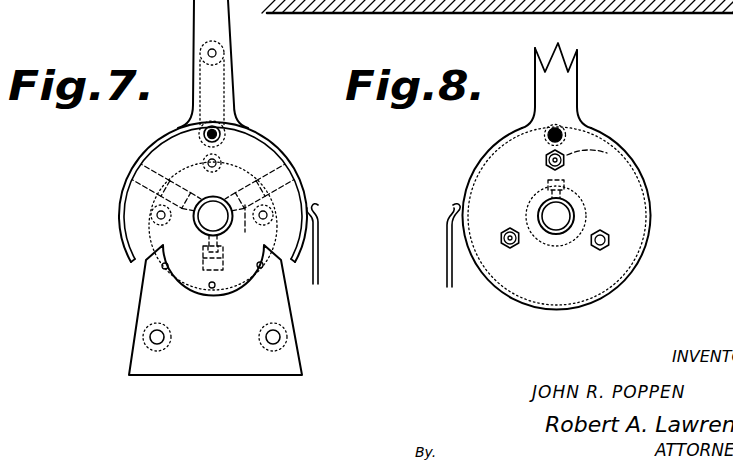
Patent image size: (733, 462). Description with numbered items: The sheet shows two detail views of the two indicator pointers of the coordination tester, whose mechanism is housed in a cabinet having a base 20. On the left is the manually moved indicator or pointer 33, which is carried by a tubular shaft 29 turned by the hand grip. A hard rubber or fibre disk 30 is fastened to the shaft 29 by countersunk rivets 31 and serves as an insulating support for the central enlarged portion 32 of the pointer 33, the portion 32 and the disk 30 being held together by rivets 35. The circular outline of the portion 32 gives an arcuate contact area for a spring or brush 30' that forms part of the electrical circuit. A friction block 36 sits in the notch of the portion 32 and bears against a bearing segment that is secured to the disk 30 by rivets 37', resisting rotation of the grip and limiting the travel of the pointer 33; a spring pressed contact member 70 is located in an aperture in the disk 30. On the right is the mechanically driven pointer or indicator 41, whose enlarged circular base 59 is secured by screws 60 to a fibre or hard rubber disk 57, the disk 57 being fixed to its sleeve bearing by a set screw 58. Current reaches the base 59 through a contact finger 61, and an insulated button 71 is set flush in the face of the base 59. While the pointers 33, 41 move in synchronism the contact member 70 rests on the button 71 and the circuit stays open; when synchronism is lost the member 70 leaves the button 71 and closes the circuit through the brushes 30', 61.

In FIG. 8, the base 20 is at (445, 13).
In FIG. 7, the tubular shaft 29 is at (197, 232).
In FIG. 7, the disk 30 is at (286, 198).
In FIG. 7, the spring or brush 30' is at (333, 244).
In FIG. 7, the countersunk rivets 31 is at (227, 250).
In FIG. 7, the central enlarged portion 32 is at (272, 140).
In FIG. 7, the indicator or pointer 33 is at (201, 9).
In FIG. 7, the rivets 35 is at (159, 214).
In FIG. 7, the friction block 36 is at (248, 277).
In FIG. 7, the rivets 37' is at (212, 294).
In FIG. 8, the pointer or indicator 41 is at (568, 80).
In FIG. 8, the fibre or hard rubber disk 57 is at (627, 153).
In FIG. 8, the set screw 58 is at (540, 178).
In FIG. 8, the enlarged circular base 59 is at (630, 208).
In FIG. 8, the screws 60 is at (538, 273).
In FIG. 8, the contact finger 61 is at (448, 249).
In FIG. 7, the spring pressed contact member 70 is at (205, 134).
In FIG. 8, the insulated button 71 is at (546, 134).